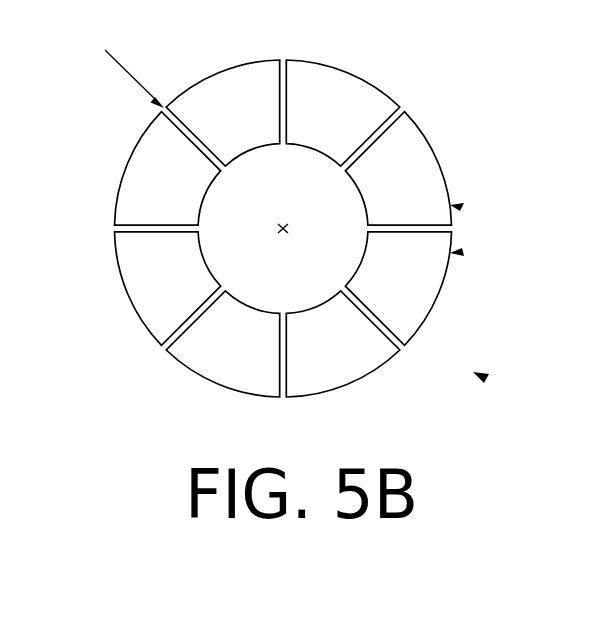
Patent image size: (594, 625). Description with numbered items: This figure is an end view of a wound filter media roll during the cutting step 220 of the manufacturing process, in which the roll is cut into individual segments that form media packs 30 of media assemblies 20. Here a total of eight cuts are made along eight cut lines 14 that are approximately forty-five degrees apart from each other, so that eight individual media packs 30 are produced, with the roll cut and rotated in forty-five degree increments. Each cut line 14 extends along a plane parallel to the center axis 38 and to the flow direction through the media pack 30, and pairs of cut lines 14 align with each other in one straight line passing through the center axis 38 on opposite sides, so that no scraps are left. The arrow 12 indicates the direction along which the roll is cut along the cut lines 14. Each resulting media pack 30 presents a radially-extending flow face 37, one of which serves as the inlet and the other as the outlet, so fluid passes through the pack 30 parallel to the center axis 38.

The arrow 12 is at (122, 58).
The cut lines 14 is at (197, 141).
The media assembly 20 is at (460, 207).
The media pack 30 is at (253, 62).
The flow face 37 is at (198, 353).
The center axis 38 is at (278, 230).
The cutting step 220 is at (486, 378).